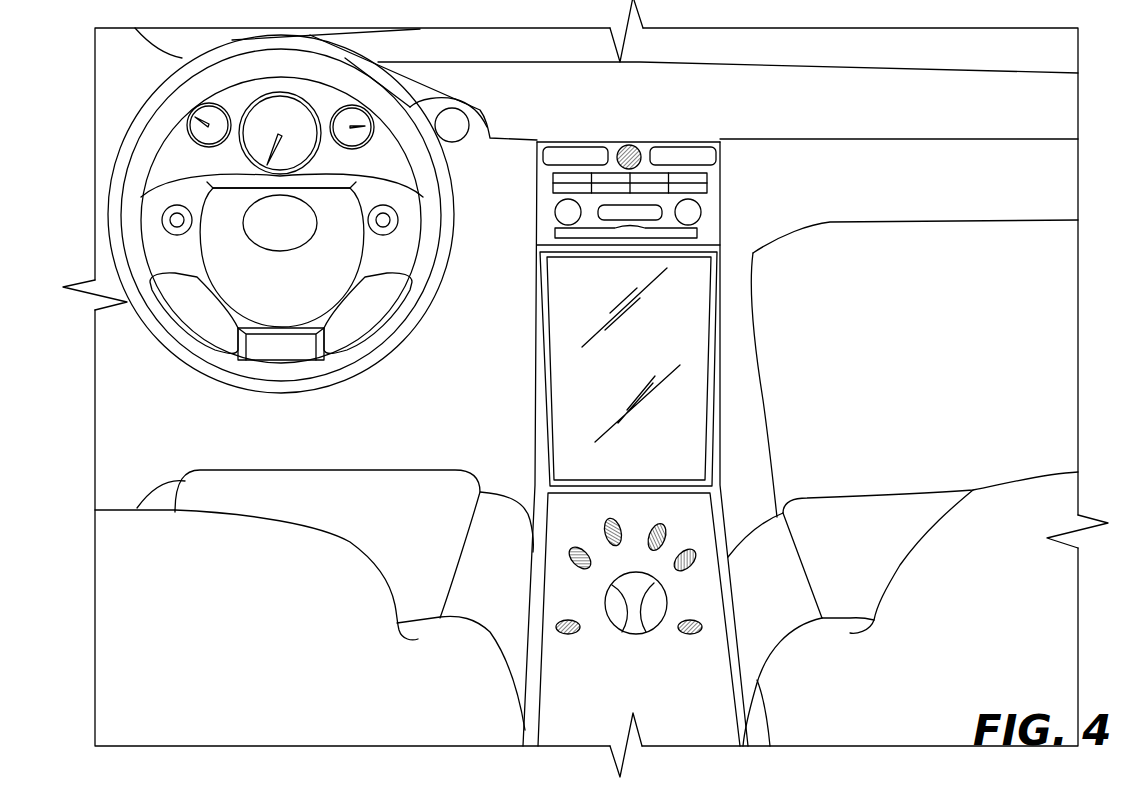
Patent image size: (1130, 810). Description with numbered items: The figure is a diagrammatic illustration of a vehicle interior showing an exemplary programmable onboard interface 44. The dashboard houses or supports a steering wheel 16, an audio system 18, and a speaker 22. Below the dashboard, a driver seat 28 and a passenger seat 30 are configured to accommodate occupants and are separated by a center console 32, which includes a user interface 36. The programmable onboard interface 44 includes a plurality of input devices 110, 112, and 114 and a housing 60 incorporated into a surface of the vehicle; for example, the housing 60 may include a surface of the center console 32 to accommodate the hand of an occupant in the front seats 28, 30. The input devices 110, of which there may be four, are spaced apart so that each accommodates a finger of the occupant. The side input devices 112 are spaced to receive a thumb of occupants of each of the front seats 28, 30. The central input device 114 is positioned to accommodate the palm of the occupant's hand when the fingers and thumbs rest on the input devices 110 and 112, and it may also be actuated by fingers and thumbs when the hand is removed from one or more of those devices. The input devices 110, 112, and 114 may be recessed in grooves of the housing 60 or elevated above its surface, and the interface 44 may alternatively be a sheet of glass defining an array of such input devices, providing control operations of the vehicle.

The steering wheel 16 is at (181, 376).
The audio system 18 is at (720, 207).
The speaker 22 is at (621, 109).
The driver seat 28 is at (428, 466).
The passenger seat 30 is at (868, 485).
The center console 32 is at (581, 716).
The user interface 36 is at (636, 359).
The programmable onboard interface 44 is at (679, 656).
The housing 60 is at (701, 599).
The input devices 110 is at (575, 545).
The side input devices 112 is at (575, 618).
The central input device 114 is at (613, 633).